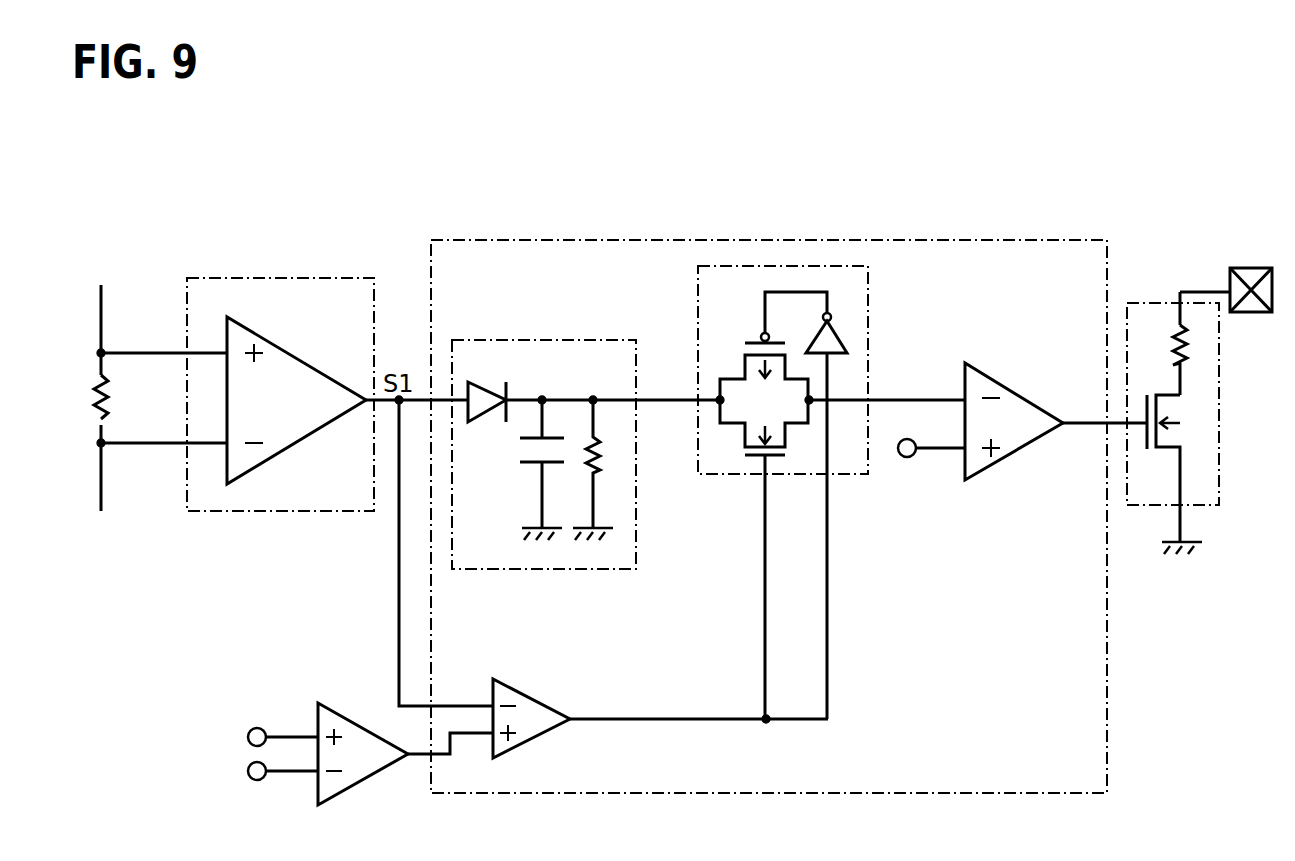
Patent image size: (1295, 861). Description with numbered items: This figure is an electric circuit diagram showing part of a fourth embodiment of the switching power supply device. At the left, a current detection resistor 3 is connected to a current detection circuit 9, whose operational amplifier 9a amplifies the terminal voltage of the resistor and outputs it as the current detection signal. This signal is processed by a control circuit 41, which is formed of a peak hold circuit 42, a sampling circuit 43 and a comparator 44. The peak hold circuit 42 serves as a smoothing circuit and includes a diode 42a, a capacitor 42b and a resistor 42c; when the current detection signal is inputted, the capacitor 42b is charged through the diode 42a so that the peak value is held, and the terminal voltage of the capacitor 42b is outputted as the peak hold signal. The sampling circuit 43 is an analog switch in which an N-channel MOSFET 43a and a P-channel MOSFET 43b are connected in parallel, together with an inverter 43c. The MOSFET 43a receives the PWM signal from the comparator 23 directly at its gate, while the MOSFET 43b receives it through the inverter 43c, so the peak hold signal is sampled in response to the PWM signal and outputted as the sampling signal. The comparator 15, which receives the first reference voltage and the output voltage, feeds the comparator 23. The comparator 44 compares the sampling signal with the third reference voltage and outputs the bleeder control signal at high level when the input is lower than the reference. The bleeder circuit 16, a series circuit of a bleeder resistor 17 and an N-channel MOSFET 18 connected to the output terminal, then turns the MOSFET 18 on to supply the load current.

The current detection resistor 3 is at (111, 392).
The current detection circuit 9 is at (306, 278).
The operational amplifier 9a is at (310, 362).
The control circuit 41 is at (624, 240).
The peak hold circuit 42 is at (569, 340).
The diode 42a is at (490, 378).
The capacitor 42b is at (517, 466).
The resistor 42c is at (602, 455).
The sampling circuit 43 is at (829, 266).
The N-channel MOSFET 43a is at (742, 456).
The P-channel MOSFET 43b is at (741, 352).
The inverter 43c is at (840, 330).
The comparator 44 is at (1031, 397).
The comparator 15 is at (369, 727).
The comparator 23 is at (555, 708).
The bleeder circuit 16 is at (1153, 508).
The bleeder resistor 17 is at (1192, 350).
The N-channel MOSFET 18 is at (1193, 432).